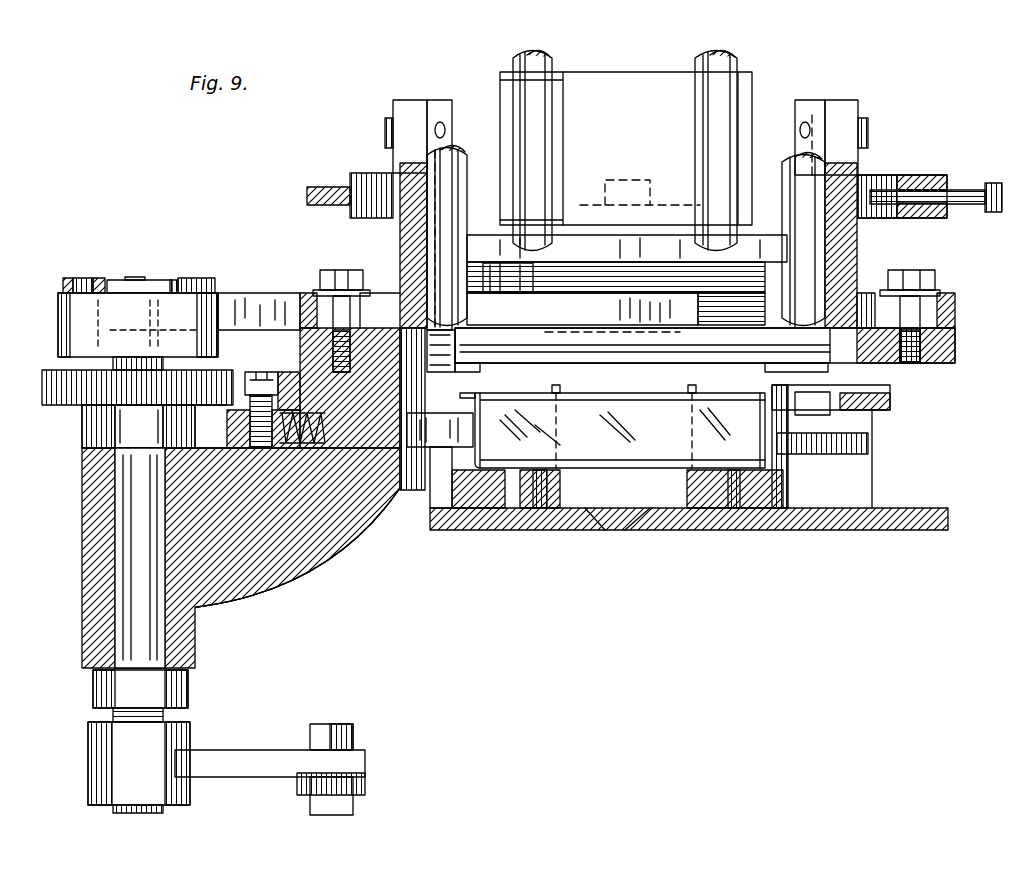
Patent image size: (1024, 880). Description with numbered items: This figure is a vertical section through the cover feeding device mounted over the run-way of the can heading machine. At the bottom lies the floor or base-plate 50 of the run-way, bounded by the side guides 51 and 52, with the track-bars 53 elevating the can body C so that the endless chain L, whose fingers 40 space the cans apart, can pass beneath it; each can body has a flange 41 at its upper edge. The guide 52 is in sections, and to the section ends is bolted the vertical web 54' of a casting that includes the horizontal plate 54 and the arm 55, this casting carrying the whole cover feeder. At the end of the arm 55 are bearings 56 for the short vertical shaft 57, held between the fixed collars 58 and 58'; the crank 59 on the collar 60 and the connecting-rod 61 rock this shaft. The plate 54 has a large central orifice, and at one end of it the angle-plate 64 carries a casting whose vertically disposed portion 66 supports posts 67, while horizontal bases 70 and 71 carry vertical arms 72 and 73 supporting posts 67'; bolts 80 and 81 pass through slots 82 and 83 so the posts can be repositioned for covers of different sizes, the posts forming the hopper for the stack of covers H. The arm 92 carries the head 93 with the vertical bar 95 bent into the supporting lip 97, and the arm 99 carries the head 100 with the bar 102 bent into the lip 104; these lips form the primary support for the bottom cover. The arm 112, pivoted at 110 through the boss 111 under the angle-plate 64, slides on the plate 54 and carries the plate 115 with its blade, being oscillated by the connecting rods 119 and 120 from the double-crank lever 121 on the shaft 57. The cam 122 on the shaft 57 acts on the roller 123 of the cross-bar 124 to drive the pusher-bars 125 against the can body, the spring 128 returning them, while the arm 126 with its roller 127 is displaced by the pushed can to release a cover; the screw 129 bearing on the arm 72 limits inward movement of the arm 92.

The finger 40 is at (562, 388).
The flange 41 is at (470, 397).
The floor or base-plate 50 is at (710, 530).
The side guide 51 is at (875, 473).
The side guide 52 is at (440, 512).
The track-bar 53 is at (490, 530).
The horizontal plate 54 is at (723, 358).
The vertical web 54' is at (309, 547).
The arm 55 is at (312, 552).
The bearings 56 is at (82, 562).
The short vertical shaft 57 is at (150, 290).
The fixed collar 58 is at (116, 426).
The fixed collar 58' is at (118, 696).
The crank 59 is at (235, 758).
The collar 60 is at (92, 746).
The connecting-rod 61 is at (350, 781).
The angle-plate 64 is at (768, 233).
The vertically disposed portion 66 is at (626, 148).
The post 67 is at (625, 142).
The post 67' is at (626, 208).
The horizontal base 70 is at (956, 300).
The horizontal base 71 is at (310, 300).
The vertical arm 72 is at (850, 244).
The vertical arm 73 is at (405, 240).
The bolt 80 is at (925, 280).
The bolt 81 is at (338, 272).
The slot 82 is at (870, 295).
The slot 83 is at (372, 300).
The arm 92 is at (918, 176).
The head 93 is at (842, 108).
The vertical bar 95 is at (808, 108).
The supporting lip 97 is at (770, 368).
The arm 99 is at (353, 188).
The head 100 is at (408, 110).
The bar 102 is at (440, 108).
The supporting lip 104 is at (480, 368).
The pivot 110 is at (532, 325).
The boss 111 is at (503, 272).
The arm 112 is at (252, 290).
The plate 115 is at (592, 330).
The connecting rod 119 is at (207, 282).
The connecting rod 120 is at (66, 283).
The double-crank lever 121 is at (80, 312).
The cam 122 is at (45, 386).
The roller 123 is at (278, 375).
The cross-bar 124 is at (195, 424).
The pusher-bar 125 is at (410, 490).
The arm 126 is at (890, 400).
The roller 127 is at (870, 444).
The spring 128 is at (312, 445).
The screw 129 is at (968, 188).
The container or can body C is at (655, 448).
The bottom cover of the stack H is at (640, 362).
The endless chain L is at (585, 530).